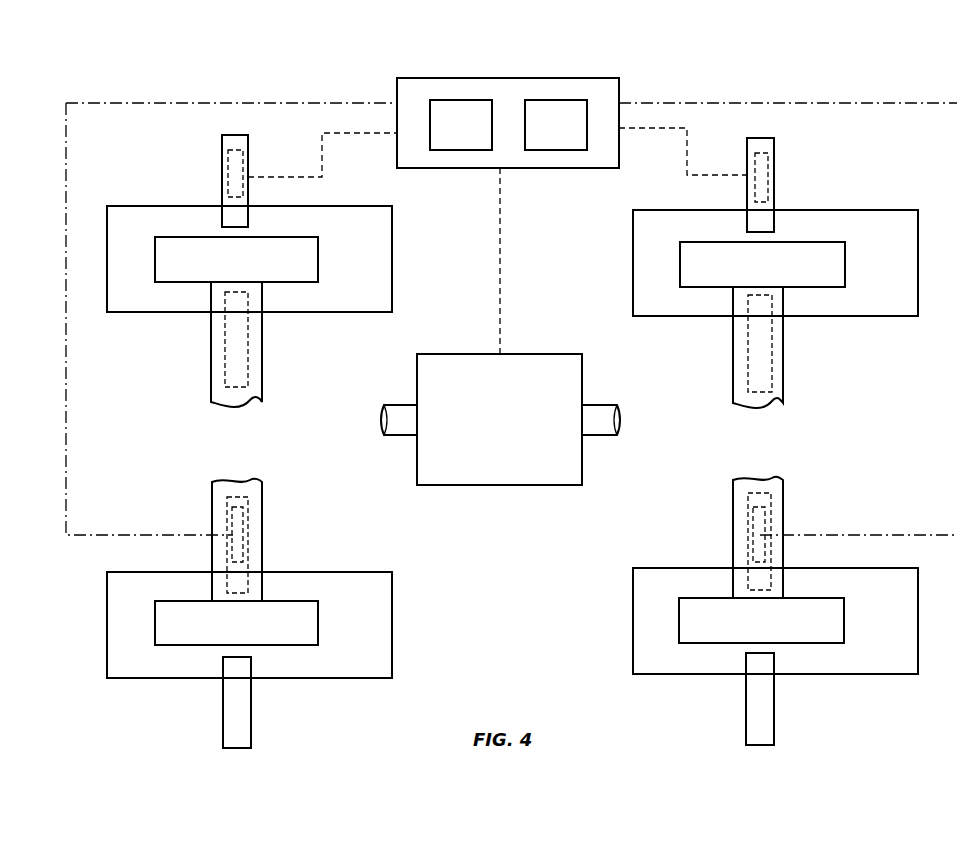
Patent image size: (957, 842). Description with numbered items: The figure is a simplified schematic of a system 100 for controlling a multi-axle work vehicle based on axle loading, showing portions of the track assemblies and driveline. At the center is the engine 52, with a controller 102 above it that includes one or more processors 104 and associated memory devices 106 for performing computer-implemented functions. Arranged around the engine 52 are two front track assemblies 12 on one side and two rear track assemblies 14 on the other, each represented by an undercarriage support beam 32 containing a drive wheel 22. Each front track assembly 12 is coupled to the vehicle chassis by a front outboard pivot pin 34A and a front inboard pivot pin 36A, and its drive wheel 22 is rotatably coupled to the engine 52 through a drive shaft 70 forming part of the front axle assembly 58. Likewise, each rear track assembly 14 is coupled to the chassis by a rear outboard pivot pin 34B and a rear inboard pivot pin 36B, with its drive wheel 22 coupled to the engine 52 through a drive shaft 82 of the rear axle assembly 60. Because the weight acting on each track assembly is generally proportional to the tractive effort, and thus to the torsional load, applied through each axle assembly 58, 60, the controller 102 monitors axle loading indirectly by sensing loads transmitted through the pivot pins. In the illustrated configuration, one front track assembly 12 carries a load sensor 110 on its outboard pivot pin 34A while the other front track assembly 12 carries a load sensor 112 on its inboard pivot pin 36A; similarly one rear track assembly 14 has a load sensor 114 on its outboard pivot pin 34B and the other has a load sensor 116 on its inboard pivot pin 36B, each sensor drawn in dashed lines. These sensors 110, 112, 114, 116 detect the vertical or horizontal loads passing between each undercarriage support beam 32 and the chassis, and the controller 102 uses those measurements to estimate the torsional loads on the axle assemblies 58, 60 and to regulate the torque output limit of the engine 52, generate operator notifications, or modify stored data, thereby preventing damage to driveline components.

The system 100 is at (817, 68).
The controller 102 is at (397, 78).
The processor 104 is at (461, 125).
The memory device 106 is at (556, 125).
The engine 52 is at (500, 419).
The front track assembly 12 is at (873, 155).
The rear track assembly 14 is at (160, 158).
The front axle assembly 58 is at (852, 440).
The rear axle assembly 60 is at (200, 438).
The drive wheel 22 is at (318, 250).
The undercarriage support beam 32 is at (325, 312).
The front outboard pivot pin 34A is at (774, 155).
The rear outboard pivot pin 34B is at (222, 177).
The front inboard pivot pin 36A is at (772, 333).
The rear inboard pivot pin 36B is at (250, 333).
The drive shaft 70 is at (733, 345).
The drive shaft 82 is at (262, 374).
The load sensor 110 is at (768, 193).
The load sensor 112 is at (765, 521).
The load sensor 114 is at (245, 168).
The load sensor 116 is at (243, 530).